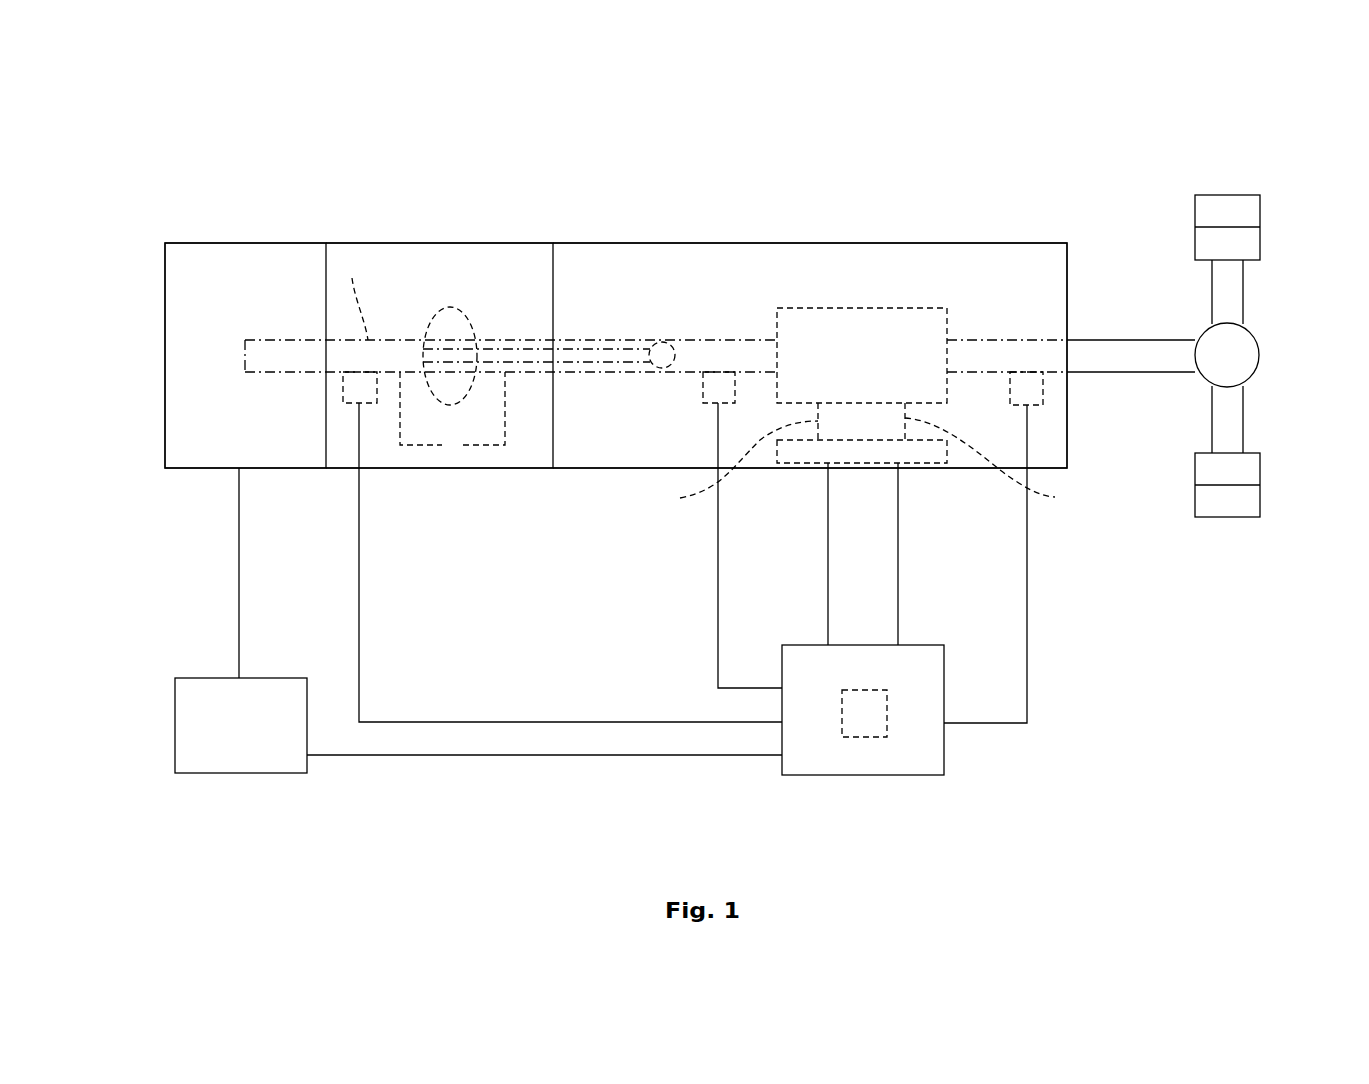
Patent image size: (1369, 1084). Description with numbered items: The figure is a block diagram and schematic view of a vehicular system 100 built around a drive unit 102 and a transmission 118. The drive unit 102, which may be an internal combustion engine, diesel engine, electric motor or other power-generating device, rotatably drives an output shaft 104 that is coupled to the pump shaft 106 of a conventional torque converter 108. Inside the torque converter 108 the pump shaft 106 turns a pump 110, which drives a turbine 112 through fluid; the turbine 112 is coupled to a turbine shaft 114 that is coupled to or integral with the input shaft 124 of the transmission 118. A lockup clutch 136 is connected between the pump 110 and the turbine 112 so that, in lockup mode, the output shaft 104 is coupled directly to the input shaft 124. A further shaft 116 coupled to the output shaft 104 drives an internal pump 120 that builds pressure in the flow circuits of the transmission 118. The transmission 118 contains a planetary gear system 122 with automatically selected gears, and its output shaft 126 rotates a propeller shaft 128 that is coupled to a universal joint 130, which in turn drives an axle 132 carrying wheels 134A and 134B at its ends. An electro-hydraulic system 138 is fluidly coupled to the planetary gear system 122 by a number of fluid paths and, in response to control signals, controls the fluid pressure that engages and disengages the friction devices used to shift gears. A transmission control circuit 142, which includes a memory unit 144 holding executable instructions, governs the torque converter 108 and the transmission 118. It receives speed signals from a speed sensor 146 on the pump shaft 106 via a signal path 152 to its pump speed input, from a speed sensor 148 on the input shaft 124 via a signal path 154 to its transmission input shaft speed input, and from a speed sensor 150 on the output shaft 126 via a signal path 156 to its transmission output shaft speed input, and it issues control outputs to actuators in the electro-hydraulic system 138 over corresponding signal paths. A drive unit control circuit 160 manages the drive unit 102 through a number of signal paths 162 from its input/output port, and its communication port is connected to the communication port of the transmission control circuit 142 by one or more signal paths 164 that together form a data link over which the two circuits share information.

The vehicular system 100 is at (205, 180).
The drive unit 102 is at (272, 243).
The output shaft 104 is at (283, 340).
The pump shaft 106 is at (356, 296).
The torque converter 108 is at (450, 243).
The pump 110 is at (433, 310).
The turbine 112 is at (470, 310).
The turbine shaft 114 is at (522, 330).
The shaft 116 is at (573, 375).
The transmission 118 is at (806, 243).
The internal pump 120 is at (660, 340).
The planetary gear system 122 is at (905, 370).
The input shaft 124 is at (730, 340).
The output shaft 126 is at (1003, 340).
The propeller shaft 128 is at (1127, 340).
The universal joint 130 is at (1255, 380).
The axle 132 is at (1245, 297).
The wheel 134A is at (1228, 193).
The wheel 134B is at (1227, 520).
The lockup clutch 136 is at (463, 445).
The electro-hydraulic system 138 is at (920, 462).
The transmission control circuit 142 is at (838, 778).
The memory unit 144 is at (870, 740).
The speed sensor 146 is at (335, 390).
The speed sensor 148 is at (712, 395).
The speed sensor 150 is at (1048, 388).
The signal path 152 is at (507, 720).
The signal path 154 is at (718, 583).
The signal path 156 is at (1029, 617).
The drive unit control circuit 160 is at (232, 775).
The signal paths 162 is at (239, 513).
The signal paths 164 is at (465, 758).